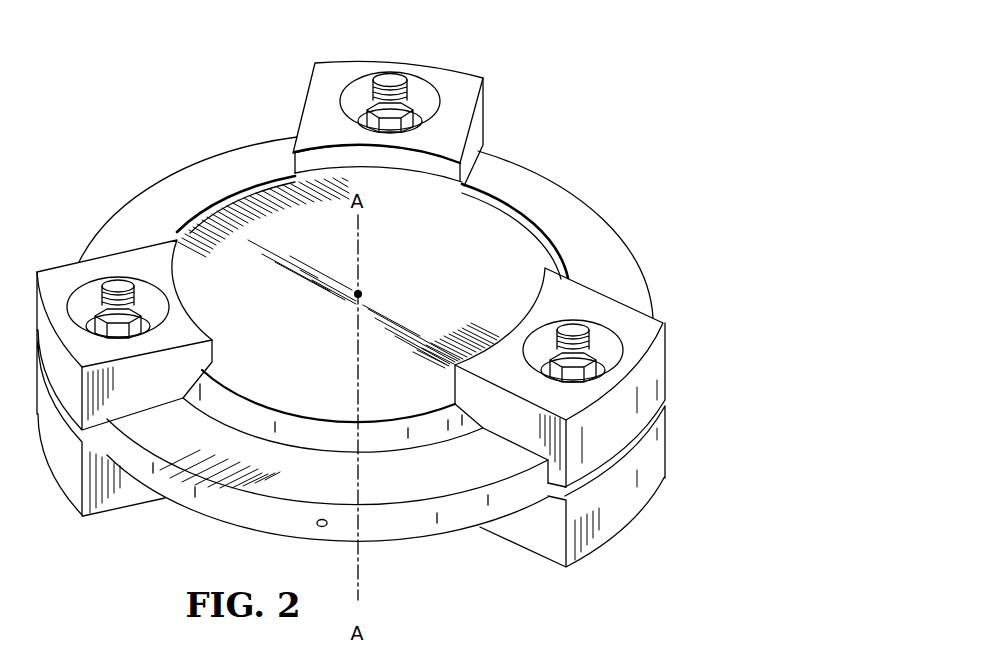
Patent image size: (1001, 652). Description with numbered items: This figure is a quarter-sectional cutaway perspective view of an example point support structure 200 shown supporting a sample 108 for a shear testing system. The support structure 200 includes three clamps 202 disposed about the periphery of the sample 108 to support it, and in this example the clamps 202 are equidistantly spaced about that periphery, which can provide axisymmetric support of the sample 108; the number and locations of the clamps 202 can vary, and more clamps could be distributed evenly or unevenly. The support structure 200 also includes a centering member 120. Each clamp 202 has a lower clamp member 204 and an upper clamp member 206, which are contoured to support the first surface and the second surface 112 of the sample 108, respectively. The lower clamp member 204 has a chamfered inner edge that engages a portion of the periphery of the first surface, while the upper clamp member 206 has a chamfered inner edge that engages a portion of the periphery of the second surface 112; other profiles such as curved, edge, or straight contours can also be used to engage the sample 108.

The support structure 200 is at (375, 307).
The clamp 202 is at (375, 311).
The lower clamp member 204 is at (666, 439).
The upper clamp member 206 is at (483, 114).
The sample 108 is at (525, 240).
The second surface 112 is at (498, 218).
The centering member 120 is at (640, 265).